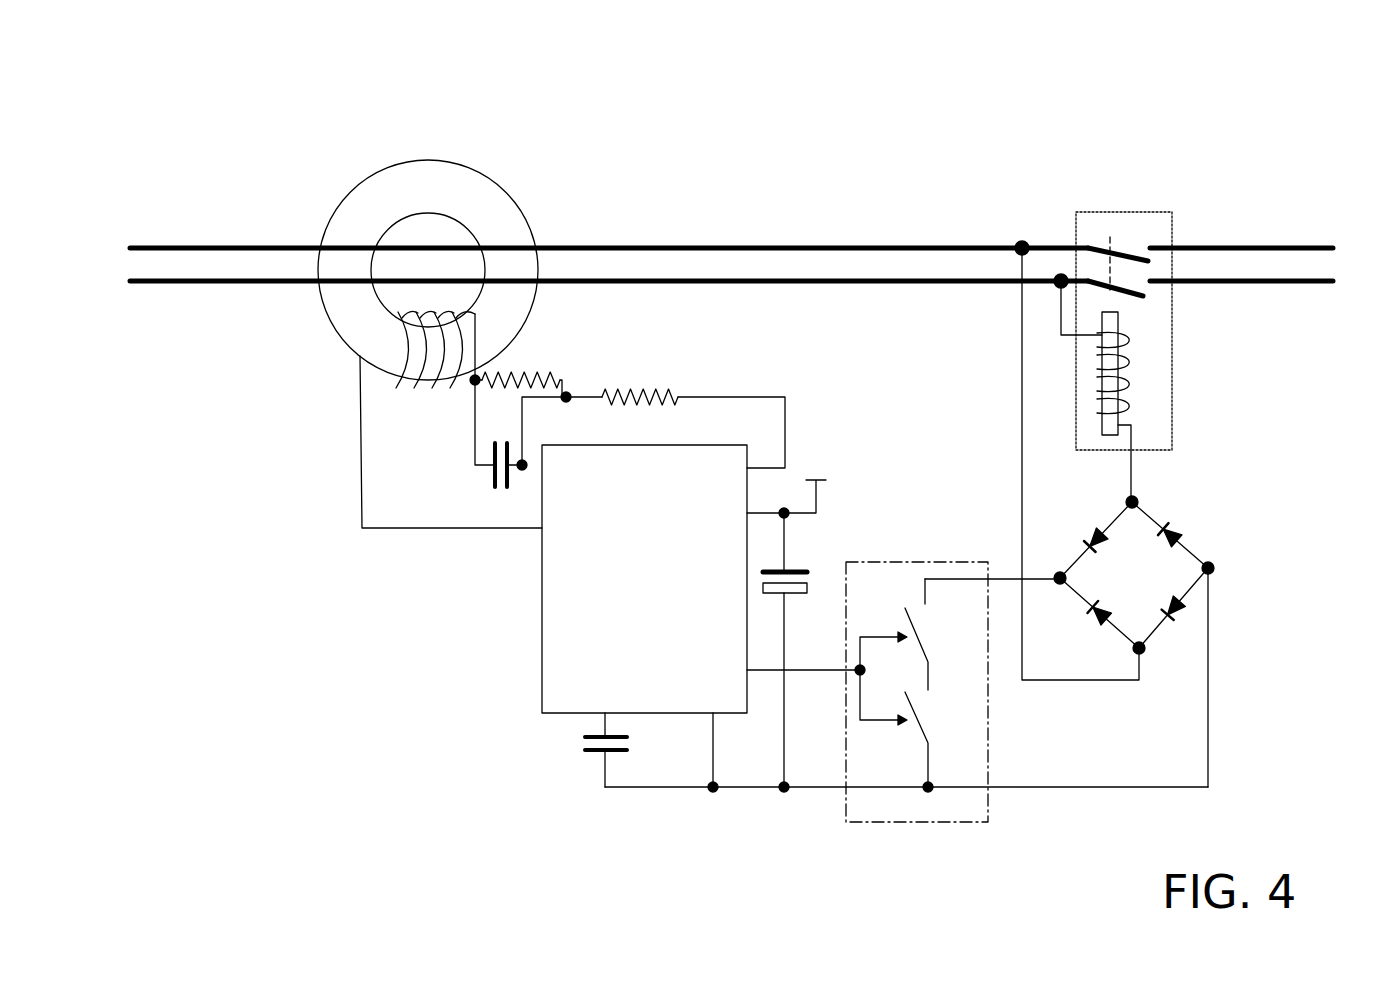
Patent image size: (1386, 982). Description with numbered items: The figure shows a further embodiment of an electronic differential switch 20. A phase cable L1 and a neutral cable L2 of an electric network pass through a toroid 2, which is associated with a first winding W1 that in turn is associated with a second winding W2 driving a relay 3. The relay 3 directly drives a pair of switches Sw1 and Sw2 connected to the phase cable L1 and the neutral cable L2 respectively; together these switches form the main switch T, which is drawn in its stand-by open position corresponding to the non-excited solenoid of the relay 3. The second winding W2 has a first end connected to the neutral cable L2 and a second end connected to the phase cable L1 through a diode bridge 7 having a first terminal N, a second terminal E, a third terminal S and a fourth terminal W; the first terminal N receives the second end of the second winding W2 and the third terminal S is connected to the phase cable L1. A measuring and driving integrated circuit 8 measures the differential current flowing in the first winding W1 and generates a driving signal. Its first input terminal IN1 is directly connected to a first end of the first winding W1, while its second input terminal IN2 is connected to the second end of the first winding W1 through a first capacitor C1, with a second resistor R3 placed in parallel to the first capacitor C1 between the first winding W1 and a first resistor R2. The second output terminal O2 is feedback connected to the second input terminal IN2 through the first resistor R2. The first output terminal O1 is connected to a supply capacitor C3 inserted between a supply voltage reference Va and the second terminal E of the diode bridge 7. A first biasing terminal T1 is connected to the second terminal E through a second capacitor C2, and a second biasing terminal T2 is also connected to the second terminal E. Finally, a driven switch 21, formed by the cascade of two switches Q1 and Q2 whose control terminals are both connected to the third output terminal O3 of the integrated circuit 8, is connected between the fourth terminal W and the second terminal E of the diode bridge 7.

The electronic differential switch 20 is at (257, 110).
The toroid 2 is at (402, 187).
The relay 3 is at (1136, 358).
The diode bridge 7 is at (1170, 580).
The measuring and driving integrated circuit 8 is at (587, 595).
The driven switch 21 is at (967, 795).
The first winding W1 is at (451, 419).
The second winding W2 is at (1085, 391).
The main switch T is at (1093, 233).
The switch Sw1 is at (1132, 236).
The switch Sw2 is at (1105, 299).
The phase cable L1 is at (739, 228).
The neutral cable L2 is at (739, 297).
The first resistor R2 is at (675, 409).
The second resistor R3 is at (520, 368).
The first capacitor C1 is at (510, 441).
The second capacitor C2 is at (584, 750).
The supply capacitor C3 is at (801, 650).
The switch Q1 is at (912, 728).
The switch Q2 is at (912, 634).
The supply voltage reference Va is at (802, 491).
The first input terminal IN1 is at (530, 527).
The second input terminal IN2 is at (542, 465).
The first output terminal O1 is at (747, 513).
The second output terminal O2 is at (747, 468).
The third output terminal O3 is at (747, 670).
The first biasing terminal T1 is at (593, 713).
The second biasing terminal T2 is at (710, 713).
The first terminal N is at (1137, 498).
The third terminal S is at (1145, 650).
The second terminal E is at (1210, 567).
The fourth terminal W is at (1060, 576).